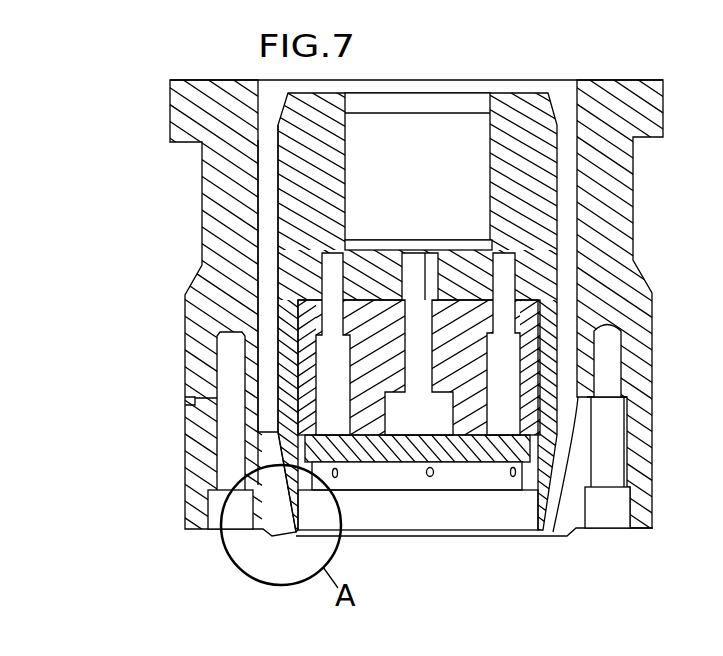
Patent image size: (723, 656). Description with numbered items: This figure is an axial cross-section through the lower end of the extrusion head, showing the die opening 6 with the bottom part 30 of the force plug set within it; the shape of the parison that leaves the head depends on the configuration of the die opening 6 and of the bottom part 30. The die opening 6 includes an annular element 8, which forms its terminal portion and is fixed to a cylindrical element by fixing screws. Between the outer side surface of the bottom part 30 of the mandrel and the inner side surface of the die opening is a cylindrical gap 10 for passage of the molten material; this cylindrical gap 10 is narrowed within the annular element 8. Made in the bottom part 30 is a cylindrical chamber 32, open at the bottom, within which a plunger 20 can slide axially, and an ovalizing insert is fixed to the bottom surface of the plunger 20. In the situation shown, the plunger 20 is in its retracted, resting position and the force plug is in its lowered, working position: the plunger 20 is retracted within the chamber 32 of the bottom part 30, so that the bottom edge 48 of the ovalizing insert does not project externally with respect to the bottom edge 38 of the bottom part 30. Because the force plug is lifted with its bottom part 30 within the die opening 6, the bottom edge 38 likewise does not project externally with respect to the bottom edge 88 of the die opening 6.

The die opening 6 is at (157, 220).
The annular element 8 is at (193, 463).
The cylindrical gap 10 is at (275, 417).
The plunger 20 is at (530, 358).
The bottom part of the force plug 30 is at (527, 198).
The cylindrical chamber 32 is at (488, 504).
The bottom edge of the bottom part of the force plug 38 is at (452, 532).
The bottom edge of the ovalizing insert 48 is at (396, 493).
The bottom edge of the die opening 88 is at (535, 537).